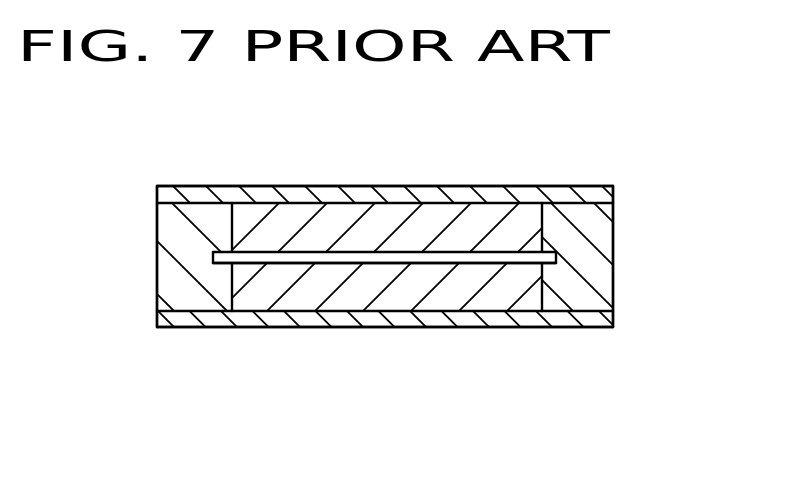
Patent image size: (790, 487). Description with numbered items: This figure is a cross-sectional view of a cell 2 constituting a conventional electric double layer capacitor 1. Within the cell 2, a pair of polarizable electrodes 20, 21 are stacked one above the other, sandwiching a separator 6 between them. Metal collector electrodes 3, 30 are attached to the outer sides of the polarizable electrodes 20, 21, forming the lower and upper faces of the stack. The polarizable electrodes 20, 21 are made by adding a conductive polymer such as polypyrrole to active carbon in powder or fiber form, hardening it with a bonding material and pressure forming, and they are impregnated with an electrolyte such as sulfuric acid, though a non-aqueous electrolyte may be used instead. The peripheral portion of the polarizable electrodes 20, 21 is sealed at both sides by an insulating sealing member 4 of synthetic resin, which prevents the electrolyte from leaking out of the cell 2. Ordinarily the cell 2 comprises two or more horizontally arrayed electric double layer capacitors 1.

The electric double layer capacitor 1 is at (660, 283).
The cell 2 is at (654, 387).
The metal collector electrode 3 is at (307, 322).
The sealing member 4 is at (168, 262).
The separator 6 is at (430, 260).
The polarizable electrode 20 is at (399, 292).
The polarizable electrode 21 is at (497, 240).
The metal collector electrode 30 is at (552, 196).